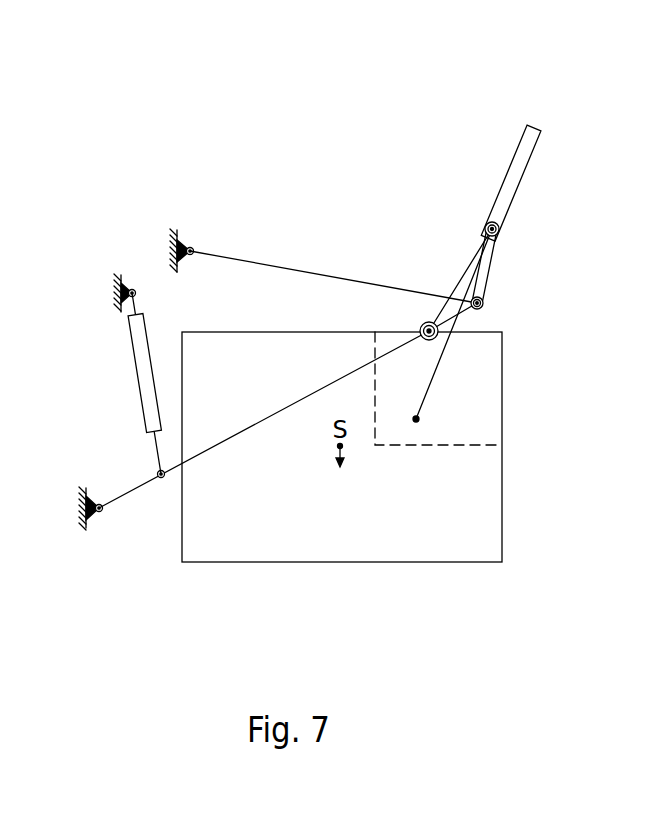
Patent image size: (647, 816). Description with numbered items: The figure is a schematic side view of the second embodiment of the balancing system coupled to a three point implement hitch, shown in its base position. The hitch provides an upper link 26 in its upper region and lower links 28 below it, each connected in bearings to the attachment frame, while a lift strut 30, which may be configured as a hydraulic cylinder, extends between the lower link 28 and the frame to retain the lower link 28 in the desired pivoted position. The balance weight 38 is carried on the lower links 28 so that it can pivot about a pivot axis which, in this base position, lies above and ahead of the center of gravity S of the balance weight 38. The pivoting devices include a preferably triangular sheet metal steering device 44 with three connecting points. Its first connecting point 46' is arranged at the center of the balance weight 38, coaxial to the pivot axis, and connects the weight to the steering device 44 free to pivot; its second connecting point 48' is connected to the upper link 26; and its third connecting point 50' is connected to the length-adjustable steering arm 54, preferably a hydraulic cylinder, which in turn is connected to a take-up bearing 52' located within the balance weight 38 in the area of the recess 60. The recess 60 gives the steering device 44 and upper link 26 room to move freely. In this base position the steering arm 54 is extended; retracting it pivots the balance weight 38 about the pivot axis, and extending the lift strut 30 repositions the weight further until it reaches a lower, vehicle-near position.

The upper links 26 is at (222, 253).
The lower links 28 is at (132, 490).
The lift strut 30 is at (142, 350).
The balance weight 38 is at (402, 522).
The sheet metal steering device 44 is at (463, 282).
The first connecting point 46' is at (395, 281).
The second connecting point 48' is at (491, 279).
The third connecting point 50' is at (461, 175).
The take-up bearing 52' is at (508, 373).
The steering arm 54 is at (522, 157).
The recess 60 is at (477, 412).